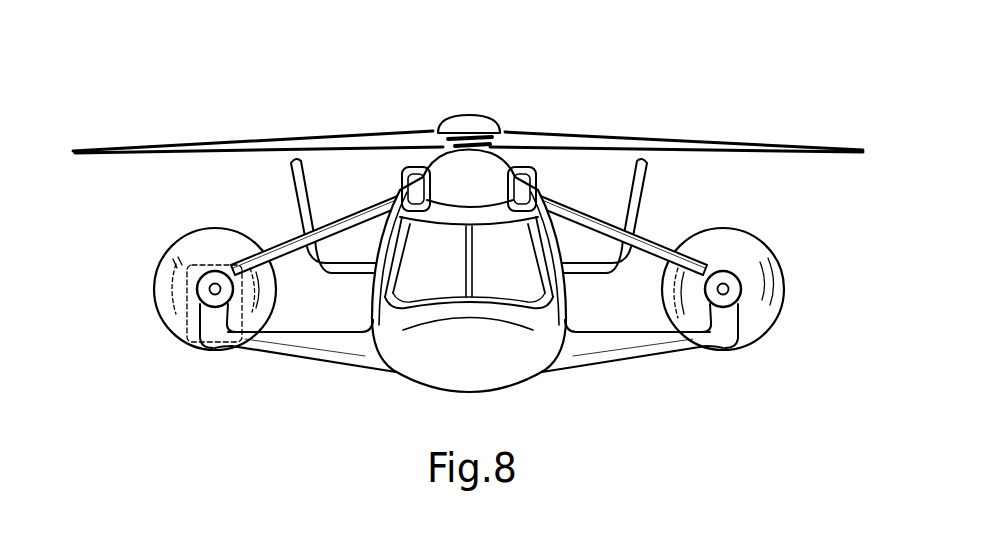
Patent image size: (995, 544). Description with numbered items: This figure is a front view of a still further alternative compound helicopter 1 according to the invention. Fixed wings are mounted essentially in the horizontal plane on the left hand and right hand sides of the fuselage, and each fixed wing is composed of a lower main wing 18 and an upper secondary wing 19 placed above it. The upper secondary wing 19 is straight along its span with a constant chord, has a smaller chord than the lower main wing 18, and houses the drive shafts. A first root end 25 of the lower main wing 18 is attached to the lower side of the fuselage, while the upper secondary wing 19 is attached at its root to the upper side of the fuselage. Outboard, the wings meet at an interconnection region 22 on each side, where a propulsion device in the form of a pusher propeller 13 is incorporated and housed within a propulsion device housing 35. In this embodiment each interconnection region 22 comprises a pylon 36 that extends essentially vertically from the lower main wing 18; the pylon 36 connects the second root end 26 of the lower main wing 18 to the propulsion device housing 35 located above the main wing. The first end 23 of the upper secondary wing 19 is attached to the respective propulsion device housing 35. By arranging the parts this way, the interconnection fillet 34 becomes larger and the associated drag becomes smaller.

The compound helicopter 1 is at (612, 121).
The pusher propeller 13 is at (150, 283).
The lower main wing 18 is at (325, 343).
The upper secondary wing 19 is at (318, 230).
The interconnection region 22 is at (185, 304).
The first end of the upper secondary wing 23 is at (205, 266).
The first root end of the lower main wing 25 is at (378, 372).
The second root end of the lower main wing 26 is at (217, 340).
The interconnection fillet 34 is at (250, 307).
The propulsion device housing 35 is at (190, 288).
The pylon 36 is at (205, 312).